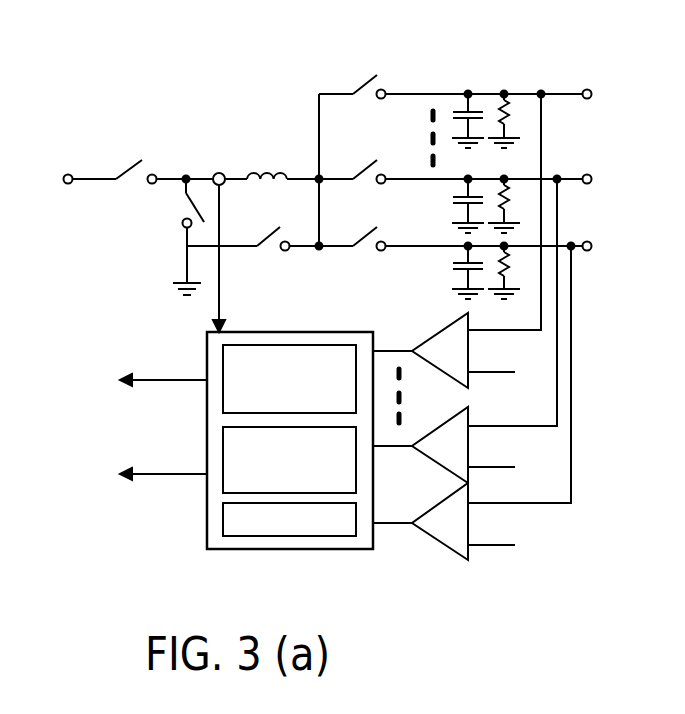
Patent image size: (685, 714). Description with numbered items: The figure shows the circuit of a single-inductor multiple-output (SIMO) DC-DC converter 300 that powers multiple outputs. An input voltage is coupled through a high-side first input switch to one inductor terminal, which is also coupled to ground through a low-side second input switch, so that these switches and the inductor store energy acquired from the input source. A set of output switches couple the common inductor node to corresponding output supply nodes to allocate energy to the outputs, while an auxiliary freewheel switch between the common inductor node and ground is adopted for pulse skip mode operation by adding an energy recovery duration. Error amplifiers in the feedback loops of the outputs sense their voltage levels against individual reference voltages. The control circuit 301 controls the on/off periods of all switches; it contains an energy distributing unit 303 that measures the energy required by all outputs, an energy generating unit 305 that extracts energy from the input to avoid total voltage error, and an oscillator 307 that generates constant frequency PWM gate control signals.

The SIMO DC-DC converter 300 is at (148, 89).
The control circuit 301 is at (248, 550).
The energy distributing unit 303 is at (222, 463).
The energy generating unit 305 is at (222, 373).
The oscillator 307 is at (222, 519).